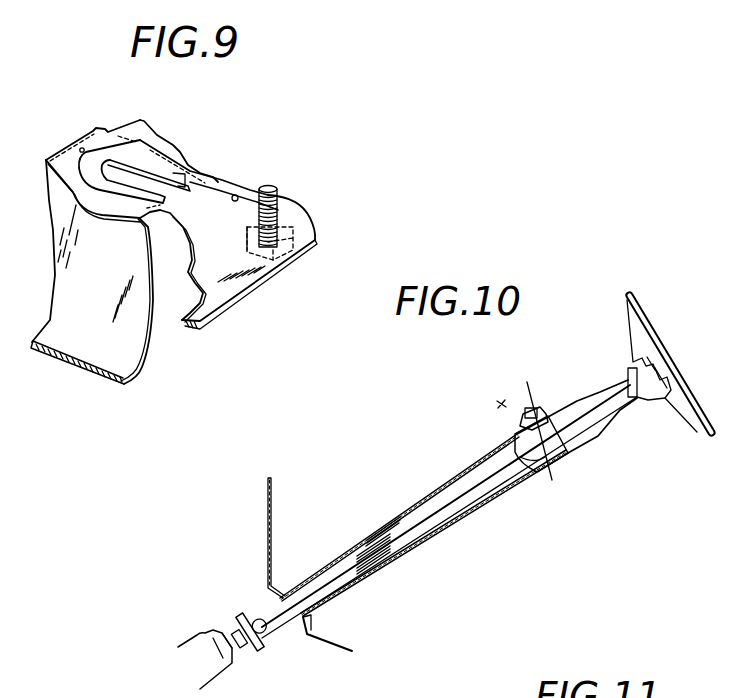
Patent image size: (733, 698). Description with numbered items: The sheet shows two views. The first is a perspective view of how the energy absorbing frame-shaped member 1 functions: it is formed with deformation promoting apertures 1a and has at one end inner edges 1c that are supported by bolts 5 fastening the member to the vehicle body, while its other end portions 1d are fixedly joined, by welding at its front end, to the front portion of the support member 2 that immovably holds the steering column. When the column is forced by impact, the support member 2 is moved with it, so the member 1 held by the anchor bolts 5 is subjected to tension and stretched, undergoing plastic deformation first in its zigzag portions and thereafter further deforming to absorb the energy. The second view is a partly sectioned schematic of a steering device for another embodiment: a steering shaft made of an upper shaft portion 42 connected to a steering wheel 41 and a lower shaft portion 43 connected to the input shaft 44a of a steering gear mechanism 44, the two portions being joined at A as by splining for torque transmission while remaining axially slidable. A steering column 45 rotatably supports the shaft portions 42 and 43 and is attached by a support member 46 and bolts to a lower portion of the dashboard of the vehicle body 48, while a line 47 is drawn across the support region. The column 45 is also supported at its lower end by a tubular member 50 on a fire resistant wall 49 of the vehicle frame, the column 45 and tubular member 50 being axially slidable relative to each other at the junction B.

In FIG. 9, the energy absorbing frame-shaped member 1 is at (233, 297).
In FIG. 9, the deformation promoting apertures 1a is at (237, 194).
In FIG. 9, the inner edges 1c is at (265, 242).
In FIG. 9, the other end portions 1d is at (82, 148).
In FIG. 9, the support member 2 is at (151, 162).
In FIG. 9, the bolts 5 is at (293, 235).
In FIG. 10, the steering wheel 41 is at (663, 352).
In FIG. 10, the upper shaft portion 42 is at (465, 499).
In FIG. 10, the lower shaft portion 43 is at (270, 627).
In FIG. 10, the steering gear mechanism 44 is at (192, 643).
In FIG. 10, the input shaft 44a is at (237, 647).
In FIG. 10, the steering column 45 is at (597, 436).
In FIG. 10, the support member 46 is at (542, 472).
In FIG. 10, the pivot axis line 47 is at (548, 436).
In FIG. 10, the vehicle body 48 is at (522, 411).
In FIG. 10, the fire resistant wall 49 is at (272, 522).
In FIG. 10, the tubular member 50 is at (330, 604).
In FIG. 10, the joint of shaft portions A is at (377, 570).
In FIG. 10, the junction B is at (382, 527).